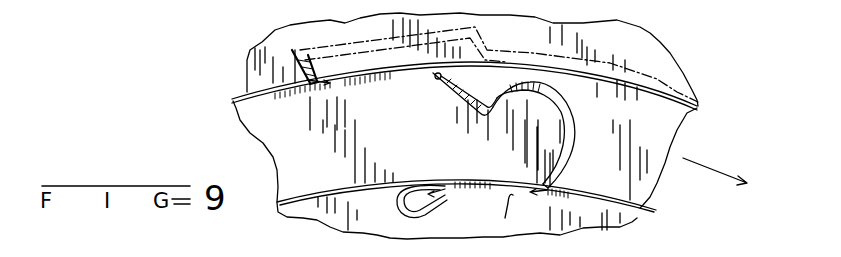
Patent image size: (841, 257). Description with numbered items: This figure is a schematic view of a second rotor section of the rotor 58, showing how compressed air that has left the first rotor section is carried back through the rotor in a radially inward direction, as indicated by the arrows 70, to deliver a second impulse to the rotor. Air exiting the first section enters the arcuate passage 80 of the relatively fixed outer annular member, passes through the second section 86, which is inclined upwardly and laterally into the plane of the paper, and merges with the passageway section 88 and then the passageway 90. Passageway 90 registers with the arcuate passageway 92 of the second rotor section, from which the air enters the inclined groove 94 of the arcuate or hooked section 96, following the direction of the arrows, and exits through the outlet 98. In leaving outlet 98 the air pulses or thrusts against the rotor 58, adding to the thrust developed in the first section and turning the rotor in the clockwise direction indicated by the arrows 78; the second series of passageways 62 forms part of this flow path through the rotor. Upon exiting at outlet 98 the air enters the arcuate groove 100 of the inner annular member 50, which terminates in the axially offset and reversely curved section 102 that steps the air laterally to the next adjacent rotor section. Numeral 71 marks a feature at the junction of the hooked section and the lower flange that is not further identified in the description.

The inner annular member 50 is at (623, 215).
The rotor 58 is at (275, 148).
The second series of passageways 62 is at (556, 134).
The arrows indicating radially inward direction 70 is at (516, 130).
The clip end junction 71 is at (552, 187).
The arrows indicating clockwise rotation 78 is at (720, 170).
The arcuate passage 80 is at (627, 72).
The second section of passageway 86 is at (483, 46).
The passageway section 88 is at (368, 25).
The passageway 90 is at (311, 76).
The arcuate passageway 92 is at (348, 80).
The inclined groove 94 is at (470, 105).
The hooked section 96 is at (547, 87).
The outlet 98 is at (466, 203).
The arcuate groove 100 is at (510, 215).
The reversely curved section 102 is at (412, 215).